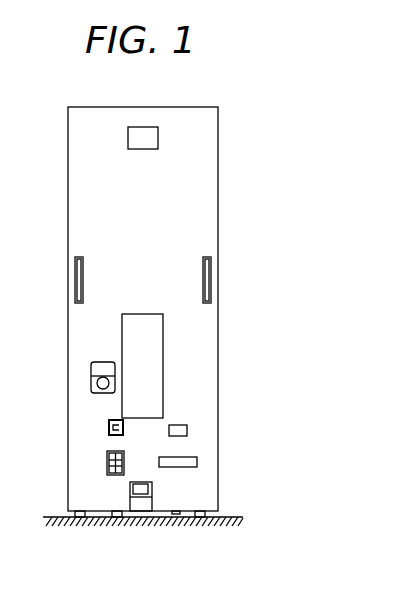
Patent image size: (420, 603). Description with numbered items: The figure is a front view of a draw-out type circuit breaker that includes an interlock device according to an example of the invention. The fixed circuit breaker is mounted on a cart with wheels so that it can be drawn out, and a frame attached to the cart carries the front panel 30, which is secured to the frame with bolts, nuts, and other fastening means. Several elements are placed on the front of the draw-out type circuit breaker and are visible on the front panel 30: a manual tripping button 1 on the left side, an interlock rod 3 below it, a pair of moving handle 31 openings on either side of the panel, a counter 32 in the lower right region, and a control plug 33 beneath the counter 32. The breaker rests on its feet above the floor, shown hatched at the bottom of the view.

The manual tripping button 1 is at (100, 382).
The interlock rod 3 is at (107, 466).
The front panel 30 is at (204, 127).
The moving handle 31 is at (208, 266).
The counter 32 is at (187, 428).
The control plug 33 is at (197, 460).